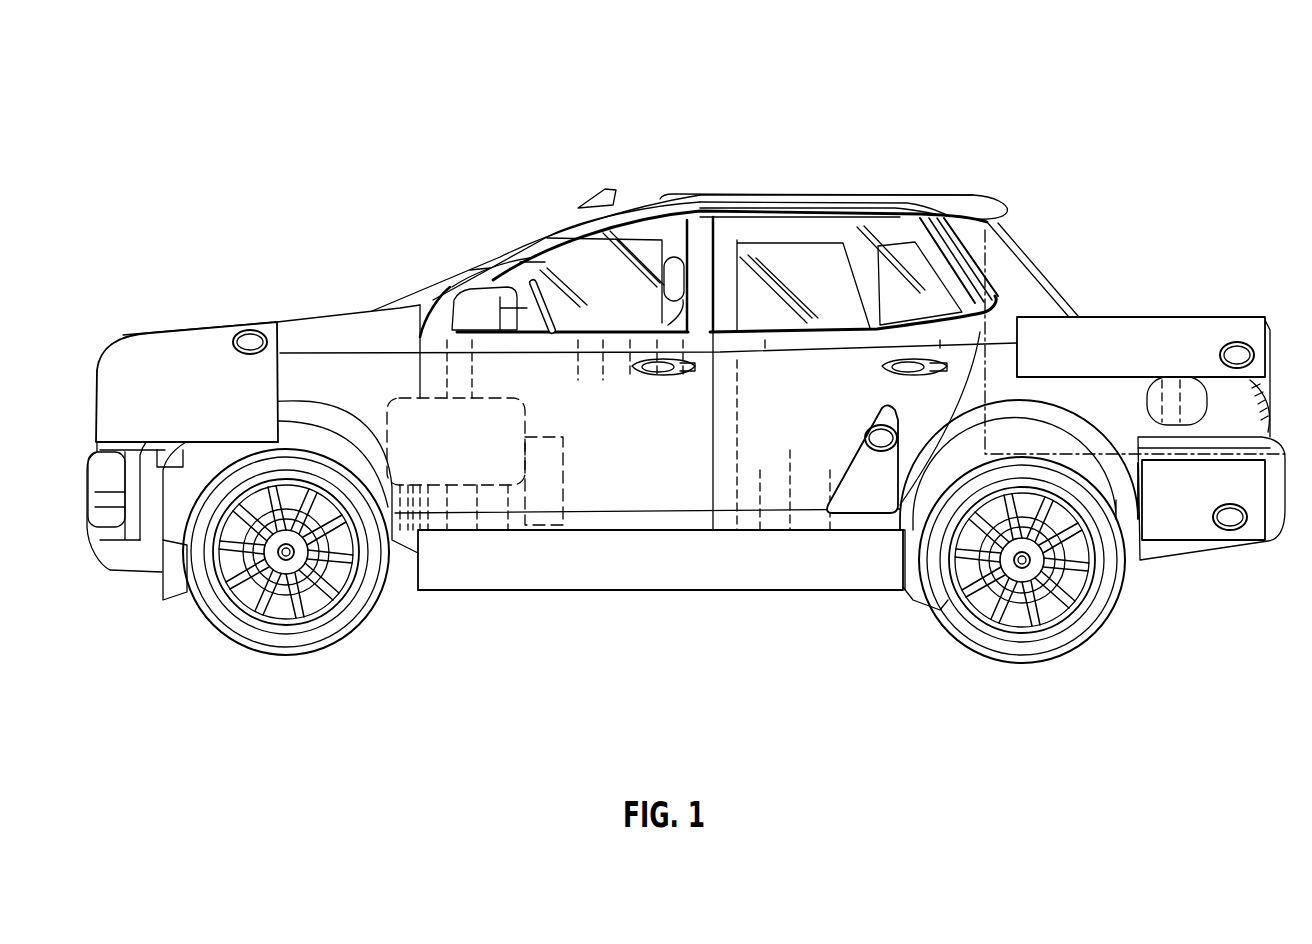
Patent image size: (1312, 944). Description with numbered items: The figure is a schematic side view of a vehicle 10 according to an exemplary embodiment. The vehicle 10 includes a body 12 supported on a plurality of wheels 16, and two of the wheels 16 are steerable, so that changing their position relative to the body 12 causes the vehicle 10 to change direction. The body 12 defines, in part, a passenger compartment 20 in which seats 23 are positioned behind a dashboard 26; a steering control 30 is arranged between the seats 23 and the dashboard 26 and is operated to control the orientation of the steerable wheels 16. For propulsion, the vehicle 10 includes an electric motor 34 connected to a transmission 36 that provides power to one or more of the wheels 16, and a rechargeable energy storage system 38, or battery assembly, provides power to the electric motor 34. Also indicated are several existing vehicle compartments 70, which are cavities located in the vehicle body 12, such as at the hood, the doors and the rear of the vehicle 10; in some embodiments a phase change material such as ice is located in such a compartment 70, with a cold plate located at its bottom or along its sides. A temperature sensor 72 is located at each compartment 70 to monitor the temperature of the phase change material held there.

The vehicle 10 is at (162, 96).
The body 12 is at (752, 196).
The wheels 16 is at (258, 626).
The passenger compartment 20 is at (587, 277).
The seats 23 is at (670, 256).
The dashboard 26 is at (480, 268).
The steering control 30 is at (540, 262).
The electric motor 34 is at (469, 456).
The transmission 36 is at (553, 469).
The rechargeable energy storage system 38 is at (643, 573).
The vehicle compartment 70 is at (132, 367).
The temperature sensor 72 is at (246, 336).